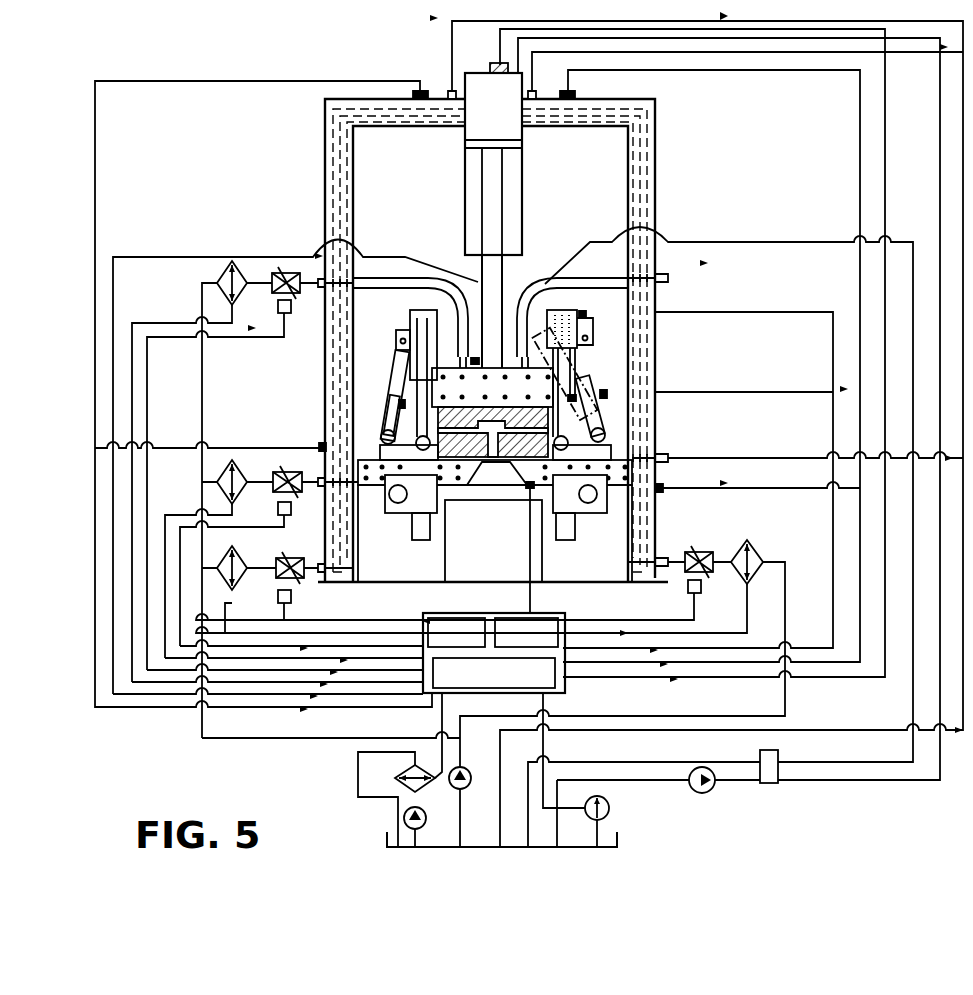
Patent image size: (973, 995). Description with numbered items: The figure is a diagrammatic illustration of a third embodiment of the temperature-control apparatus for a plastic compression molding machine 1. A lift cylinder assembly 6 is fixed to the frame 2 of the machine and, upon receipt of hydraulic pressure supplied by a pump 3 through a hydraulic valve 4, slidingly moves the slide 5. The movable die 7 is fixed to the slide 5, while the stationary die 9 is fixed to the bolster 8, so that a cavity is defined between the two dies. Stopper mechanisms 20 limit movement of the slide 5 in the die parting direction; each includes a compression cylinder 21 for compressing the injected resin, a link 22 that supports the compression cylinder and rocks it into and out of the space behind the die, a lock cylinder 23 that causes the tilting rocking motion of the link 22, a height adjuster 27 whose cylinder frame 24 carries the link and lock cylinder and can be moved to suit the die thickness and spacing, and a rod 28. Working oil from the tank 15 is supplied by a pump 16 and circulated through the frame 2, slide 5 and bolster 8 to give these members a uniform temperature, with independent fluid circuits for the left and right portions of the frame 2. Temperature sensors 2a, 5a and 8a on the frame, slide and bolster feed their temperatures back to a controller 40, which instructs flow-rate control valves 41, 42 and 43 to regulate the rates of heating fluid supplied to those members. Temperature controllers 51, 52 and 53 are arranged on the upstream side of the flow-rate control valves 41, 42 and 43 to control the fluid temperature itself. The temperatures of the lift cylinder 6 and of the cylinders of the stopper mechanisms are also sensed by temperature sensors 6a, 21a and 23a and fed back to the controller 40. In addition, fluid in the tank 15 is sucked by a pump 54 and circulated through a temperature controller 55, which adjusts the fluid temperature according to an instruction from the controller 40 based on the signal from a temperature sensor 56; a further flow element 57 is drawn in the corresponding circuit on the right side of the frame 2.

The plastic compression molding machine 1 is at (655, 124).
The frame 2 is at (655, 178).
The temperature sensor 2a is at (420, 90).
The pump 3 is at (702, 793).
The hydraulic valve 4 is at (769, 783).
The slide 5 is at (502, 310).
The temperature sensor 5a is at (473, 358).
The lift cylinder assembly 6 is at (522, 178).
The temperature sensor 6a is at (497, 63).
The movable die 7 is at (440, 418).
The bolster 8 is at (385, 498).
The temperature sensor 8a is at (528, 488).
The stationary die 9 is at (488, 455).
The tank 15 is at (617, 840).
The pump 16 is at (462, 767).
The stopper mechanism 20 is at (410, 326).
The compression cylinder 21 is at (430, 268).
The temperature sensor 21a is at (583, 312).
The link 22 is at (412, 374).
The lock cylinder 23 is at (400, 404).
The temperature sensor 23a is at (603, 394).
The cylinder frame 24 is at (438, 432).
The height adjuster 27 is at (576, 512).
The rod 28 is at (495, 523).
The controller 40 is at (565, 688).
The flow-rate control valve 41 is at (300, 582).
The flow-rate control valve 42 is at (272, 293).
The flow-rate control valve 43 is at (273, 492).
The temperature controller 51 is at (243, 590).
The temperature controller 52 is at (217, 283).
The temperature controller 53 is at (217, 482).
The pump 54 is at (404, 818).
The temperature controller 55 is at (420, 788).
The temperature sensor 56 is at (609, 808).
The flow meter 57 is at (747, 545).